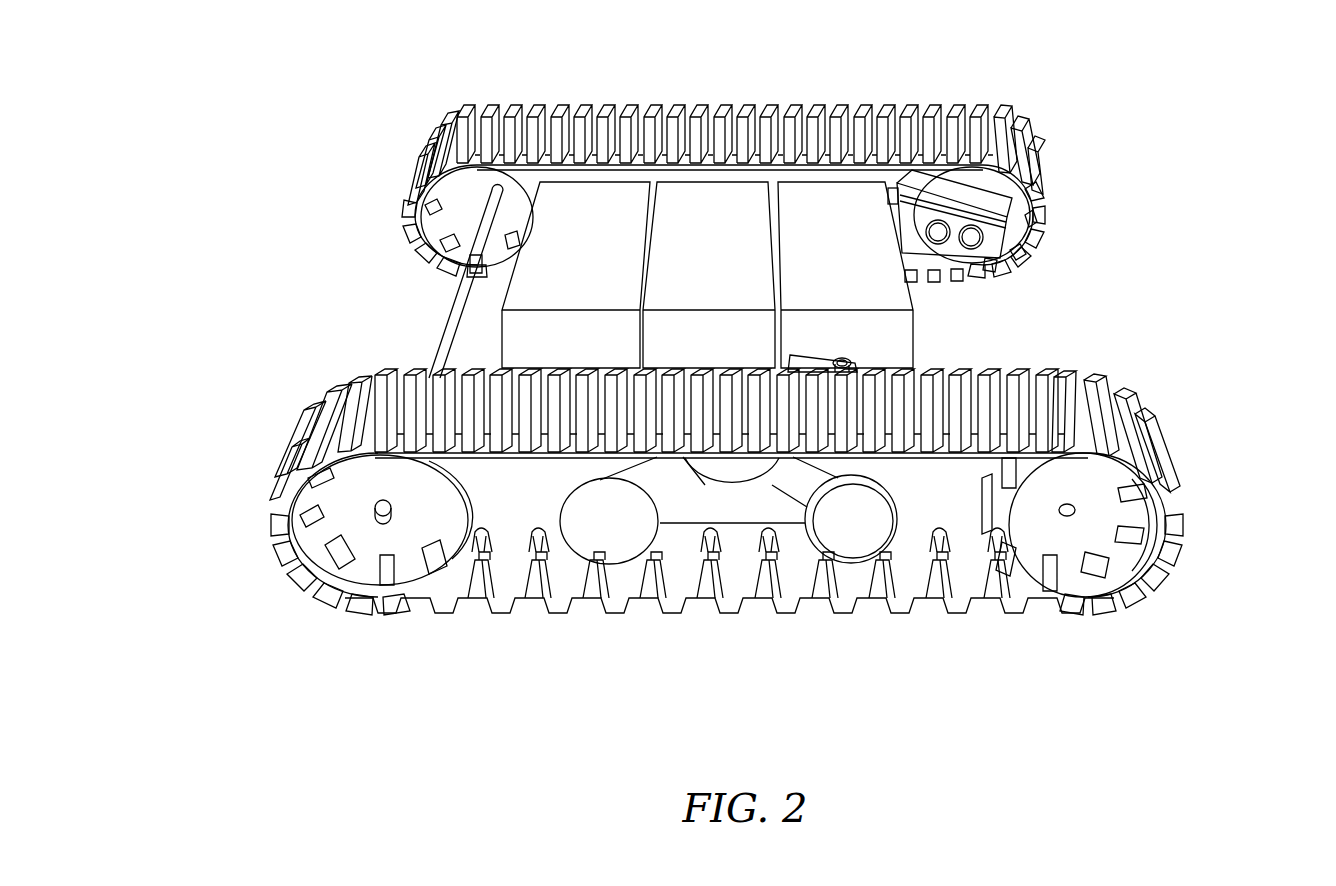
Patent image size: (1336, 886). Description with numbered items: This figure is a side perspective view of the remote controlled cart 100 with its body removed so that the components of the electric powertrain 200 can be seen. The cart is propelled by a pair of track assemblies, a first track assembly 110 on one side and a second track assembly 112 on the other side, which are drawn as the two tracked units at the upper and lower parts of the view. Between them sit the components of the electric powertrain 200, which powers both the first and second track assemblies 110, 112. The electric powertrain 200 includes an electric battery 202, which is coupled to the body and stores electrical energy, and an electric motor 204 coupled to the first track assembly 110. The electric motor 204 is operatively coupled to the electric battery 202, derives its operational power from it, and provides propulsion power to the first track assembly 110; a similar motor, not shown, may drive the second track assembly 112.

The remote controlled cart 100 is at (320, 126).
The first track assembly 110 is at (857, 105).
The second track assembly 112 is at (1163, 459).
The electric powertrain 200 is at (350, 312).
The electric battery 202 is at (853, 284).
The electric motor 204 is at (981, 207).